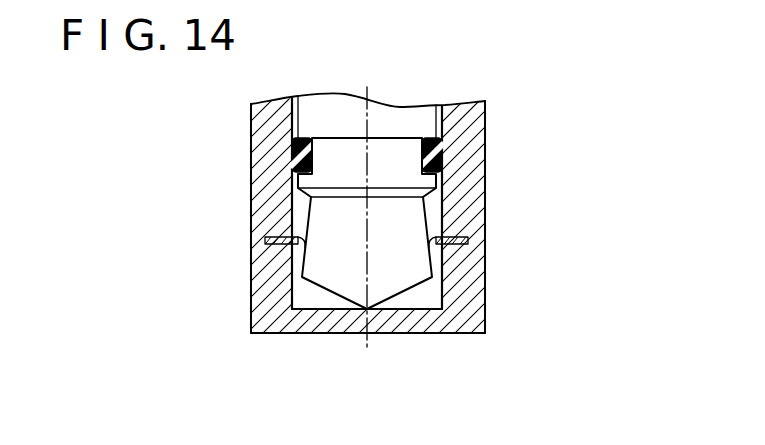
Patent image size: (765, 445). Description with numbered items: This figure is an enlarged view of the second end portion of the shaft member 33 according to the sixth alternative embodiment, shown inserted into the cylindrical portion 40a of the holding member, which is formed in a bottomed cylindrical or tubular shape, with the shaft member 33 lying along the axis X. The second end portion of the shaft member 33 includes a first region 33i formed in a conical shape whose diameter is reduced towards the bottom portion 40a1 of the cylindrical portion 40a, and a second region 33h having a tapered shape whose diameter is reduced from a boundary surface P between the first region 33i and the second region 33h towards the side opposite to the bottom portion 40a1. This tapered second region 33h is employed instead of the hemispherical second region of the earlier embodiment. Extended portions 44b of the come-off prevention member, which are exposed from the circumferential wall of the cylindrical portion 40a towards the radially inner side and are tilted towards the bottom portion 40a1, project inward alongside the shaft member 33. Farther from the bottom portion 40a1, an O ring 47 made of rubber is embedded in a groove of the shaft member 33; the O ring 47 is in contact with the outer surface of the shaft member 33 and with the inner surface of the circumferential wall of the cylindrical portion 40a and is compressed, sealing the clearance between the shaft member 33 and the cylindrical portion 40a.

The shaft member 33 is at (398, 115).
The second region 33h is at (447, 262).
The first region 33i is at (325, 289).
The cylindrical portion 40a is at (478, 150).
The bottom portion 40a1 is at (405, 329).
The extended portion 44b is at (303, 247).
The O ring 47 is at (293, 149).
The boundary surface P is at (345, 277).
The axis X is at (365, 203).